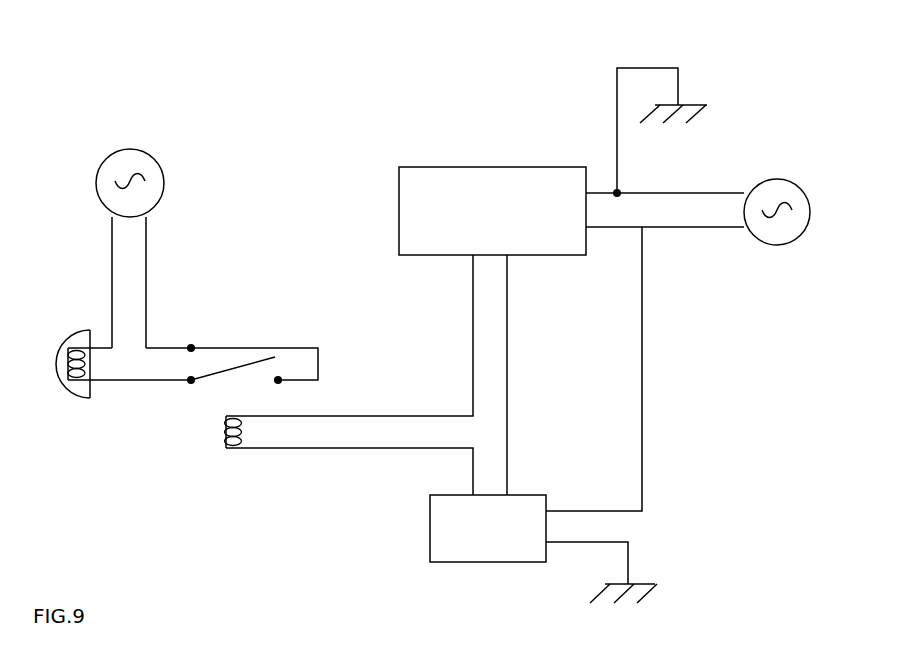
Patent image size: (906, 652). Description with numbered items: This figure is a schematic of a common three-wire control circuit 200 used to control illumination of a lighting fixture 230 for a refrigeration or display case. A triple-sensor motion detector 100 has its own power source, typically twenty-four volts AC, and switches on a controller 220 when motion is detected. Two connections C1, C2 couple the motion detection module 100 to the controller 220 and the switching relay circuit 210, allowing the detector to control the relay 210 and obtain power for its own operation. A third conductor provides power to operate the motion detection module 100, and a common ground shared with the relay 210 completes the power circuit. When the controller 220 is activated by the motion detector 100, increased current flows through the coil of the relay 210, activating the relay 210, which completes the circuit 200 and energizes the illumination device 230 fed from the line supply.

The control circuit 200 is at (330, 183).
The controller 220 is at (512, 182).
The switching relay 210 is at (228, 383).
The lighting fixture 230 is at (82, 390).
The triple-sensor motion detector 100 is at (438, 553).
The first connection C1 is at (467, 347).
The second connection C2 is at (509, 378).